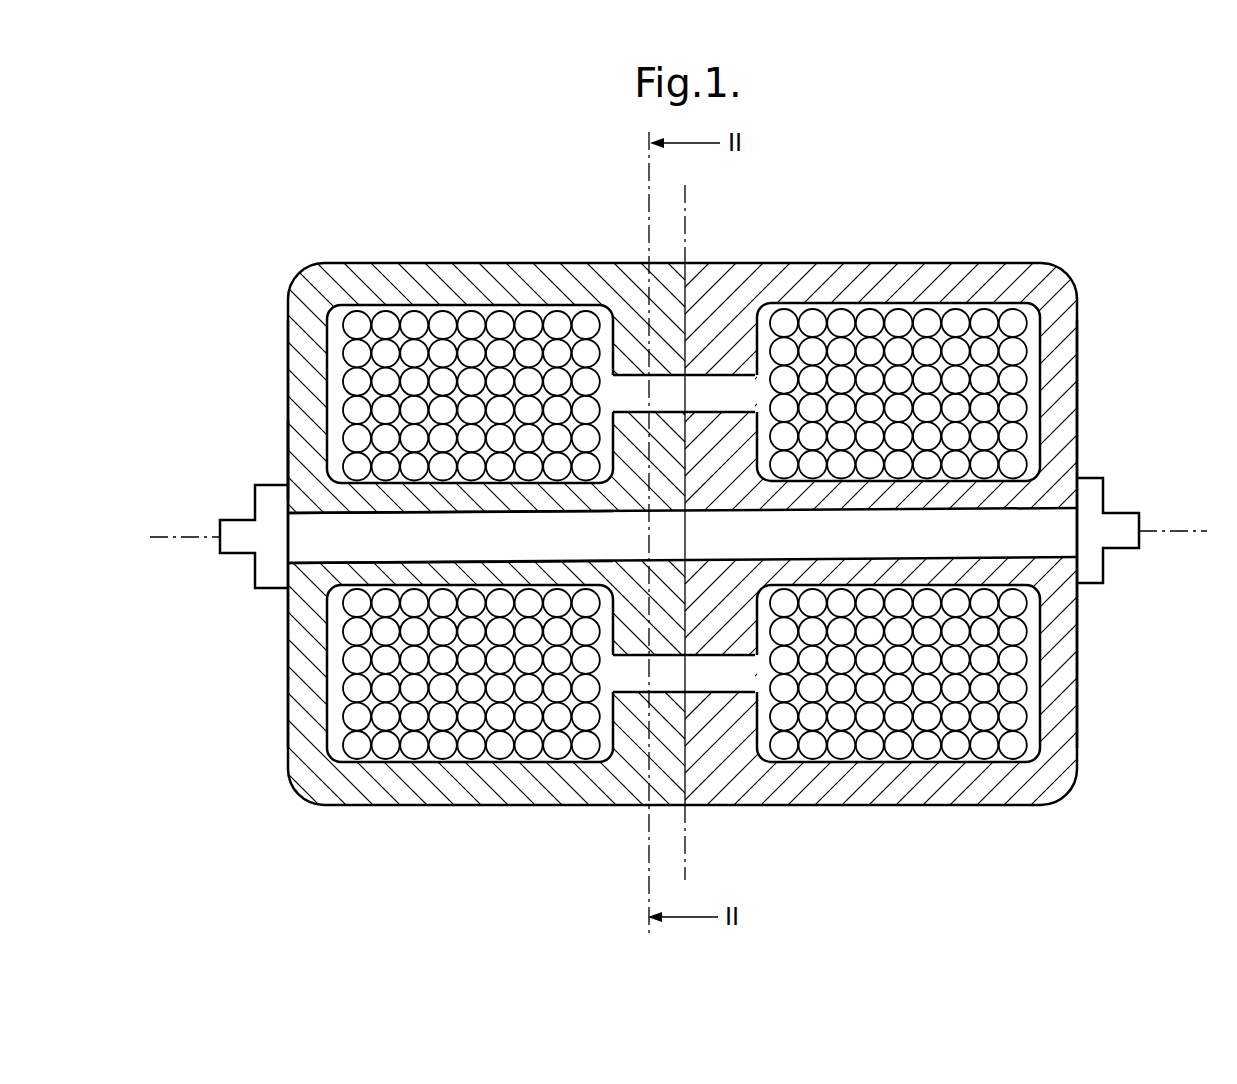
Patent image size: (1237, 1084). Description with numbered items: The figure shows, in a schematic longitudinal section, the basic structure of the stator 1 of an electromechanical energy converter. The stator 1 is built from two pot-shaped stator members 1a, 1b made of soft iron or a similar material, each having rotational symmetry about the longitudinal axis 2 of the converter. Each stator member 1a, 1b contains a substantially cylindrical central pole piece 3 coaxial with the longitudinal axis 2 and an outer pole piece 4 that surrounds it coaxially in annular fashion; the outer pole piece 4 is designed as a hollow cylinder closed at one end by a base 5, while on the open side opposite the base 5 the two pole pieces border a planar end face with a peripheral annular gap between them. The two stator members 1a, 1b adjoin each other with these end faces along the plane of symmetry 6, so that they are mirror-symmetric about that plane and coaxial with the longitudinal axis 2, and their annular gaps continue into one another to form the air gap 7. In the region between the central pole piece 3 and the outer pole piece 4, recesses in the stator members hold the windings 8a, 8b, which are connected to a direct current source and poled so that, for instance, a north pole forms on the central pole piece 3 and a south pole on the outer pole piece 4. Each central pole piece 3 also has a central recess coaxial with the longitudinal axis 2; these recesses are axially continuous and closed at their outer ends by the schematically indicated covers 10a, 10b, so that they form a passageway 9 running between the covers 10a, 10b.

The stator 1 is at (370, 242).
The stator member 1a is at (282, 315).
The stator member 1b is at (1090, 358).
The longitudinal axis 2 is at (1197, 530).
The central pole piece 3 is at (368, 573).
The outer pole piece 4 is at (518, 280).
The base 5 is at (300, 463).
The plane of symmetry 6 is at (686, 195).
The air gap 7 is at (718, 383).
The winding 8a is at (443, 345).
The winding 8b is at (927, 345).
The passageway 9 is at (1058, 543).
The cover 10a is at (265, 505).
The cover 10b is at (1095, 492).